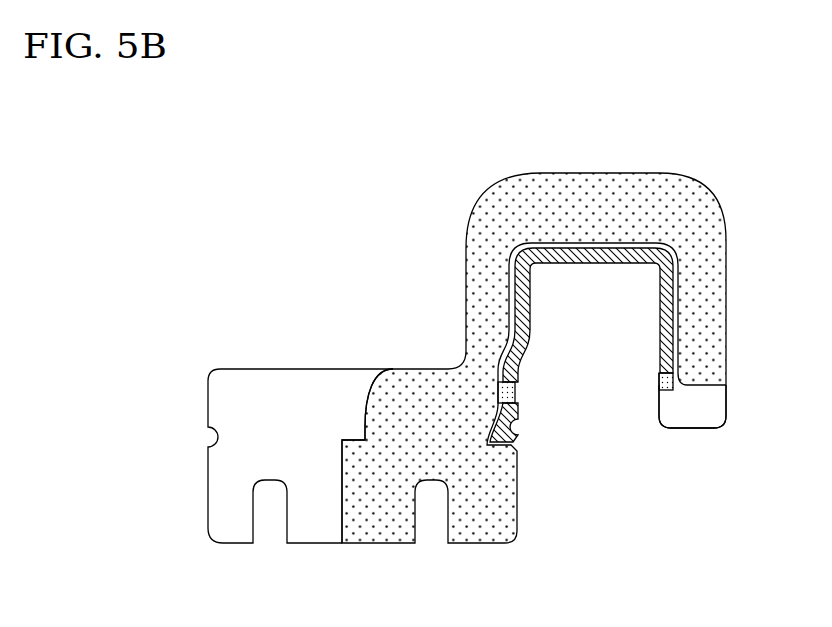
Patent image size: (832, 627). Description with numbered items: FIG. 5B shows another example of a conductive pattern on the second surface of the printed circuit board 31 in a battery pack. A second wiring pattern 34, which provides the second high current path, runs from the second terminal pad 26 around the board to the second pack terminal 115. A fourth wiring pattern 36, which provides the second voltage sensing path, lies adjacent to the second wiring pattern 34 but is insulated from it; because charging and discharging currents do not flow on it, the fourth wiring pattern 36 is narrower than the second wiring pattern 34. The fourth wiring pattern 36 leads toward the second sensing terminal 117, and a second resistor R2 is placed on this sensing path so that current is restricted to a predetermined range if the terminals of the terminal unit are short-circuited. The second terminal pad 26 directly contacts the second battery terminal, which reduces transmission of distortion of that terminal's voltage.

The printed circuit board 31 is at (754, 199).
The second wiring pattern 34 is at (570, 183).
The fourth wiring pattern 36 is at (596, 256).
The second pack terminal 115 is at (716, 364).
The second sensing terminal 117 is at (659, 382).
The second resistor R2 is at (515, 396).
The second terminal pad 26 is at (476, 540).